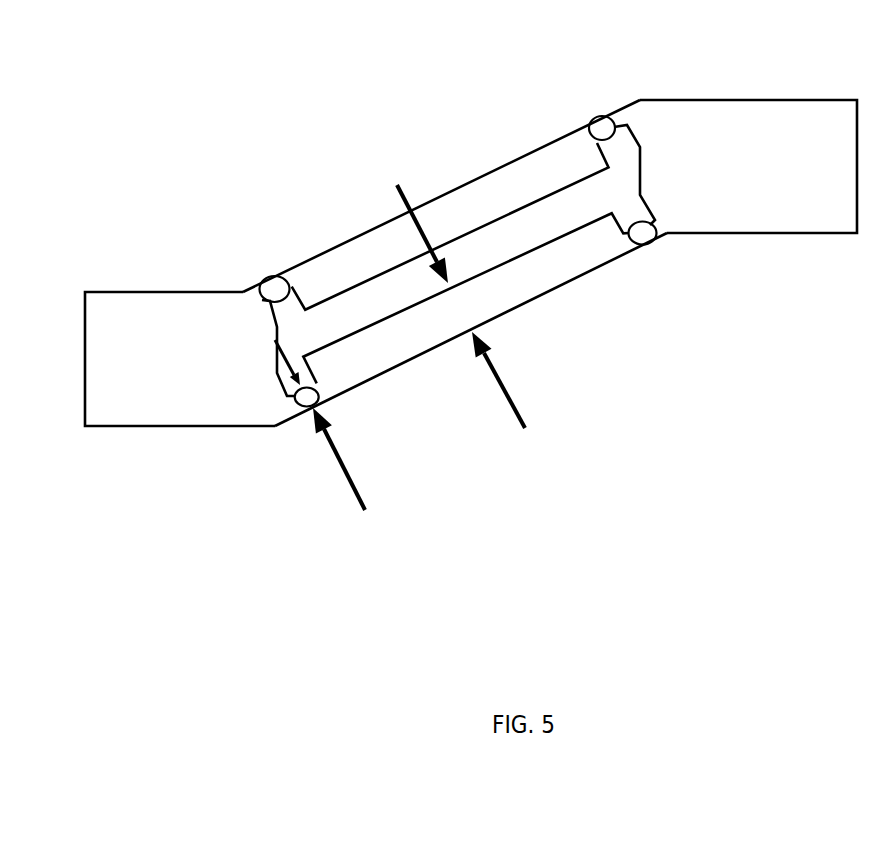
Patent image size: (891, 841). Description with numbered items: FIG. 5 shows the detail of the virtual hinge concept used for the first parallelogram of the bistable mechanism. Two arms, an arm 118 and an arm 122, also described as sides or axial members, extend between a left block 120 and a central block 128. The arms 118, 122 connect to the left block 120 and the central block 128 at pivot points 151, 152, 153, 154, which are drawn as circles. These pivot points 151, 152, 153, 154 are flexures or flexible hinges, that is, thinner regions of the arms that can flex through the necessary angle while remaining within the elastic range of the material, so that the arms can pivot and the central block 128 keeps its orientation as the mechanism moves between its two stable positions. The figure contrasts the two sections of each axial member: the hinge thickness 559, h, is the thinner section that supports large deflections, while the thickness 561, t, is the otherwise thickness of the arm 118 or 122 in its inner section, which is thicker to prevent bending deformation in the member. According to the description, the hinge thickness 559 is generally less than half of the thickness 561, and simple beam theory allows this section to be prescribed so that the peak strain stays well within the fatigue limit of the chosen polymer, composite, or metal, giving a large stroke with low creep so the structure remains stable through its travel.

The arm 118 is at (340, 267).
The left block 120 is at (128, 333).
The arm 122 is at (392, 347).
The central block 128 is at (742, 137).
The pivot point 151 is at (310, 408).
The pivot point 152 is at (268, 278).
The pivot point 153 is at (600, 113).
The pivot point 154 is at (653, 242).
The hinge thickness 559 is at (461, 480).
The thickness 561 is at (597, 386).